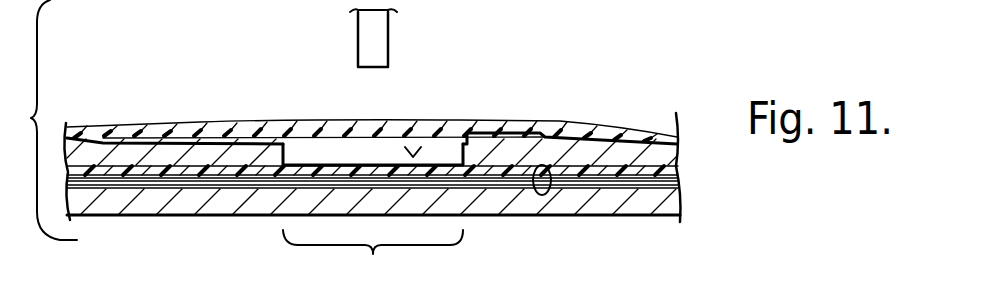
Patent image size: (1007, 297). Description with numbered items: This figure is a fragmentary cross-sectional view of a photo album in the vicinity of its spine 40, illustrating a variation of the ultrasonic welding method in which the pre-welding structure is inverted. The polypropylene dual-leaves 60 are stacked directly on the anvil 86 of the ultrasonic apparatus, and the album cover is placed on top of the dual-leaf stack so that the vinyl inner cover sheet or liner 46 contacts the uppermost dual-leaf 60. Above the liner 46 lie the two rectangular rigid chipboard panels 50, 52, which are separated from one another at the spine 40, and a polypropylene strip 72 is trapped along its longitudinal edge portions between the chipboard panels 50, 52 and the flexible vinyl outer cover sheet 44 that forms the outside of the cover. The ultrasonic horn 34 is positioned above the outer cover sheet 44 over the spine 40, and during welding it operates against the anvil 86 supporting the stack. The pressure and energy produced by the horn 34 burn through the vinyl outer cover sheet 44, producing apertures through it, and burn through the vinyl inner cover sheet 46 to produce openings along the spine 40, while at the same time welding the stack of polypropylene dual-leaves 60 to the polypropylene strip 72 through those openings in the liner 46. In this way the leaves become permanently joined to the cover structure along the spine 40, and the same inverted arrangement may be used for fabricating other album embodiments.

The ultrasonic horn 34 is at (378, 50).
The spine 40 is at (373, 254).
The outer cover sheet 44 is at (617, 132).
The inner cover sheet 46 is at (233, 172).
The rigid panel 50 is at (517, 153).
The rigid panel 52 is at (253, 157).
The dual-leaves 60 is at (542, 196).
The polypropylene strip 72 is at (423, 140).
The anvil 86 is at (587, 203).